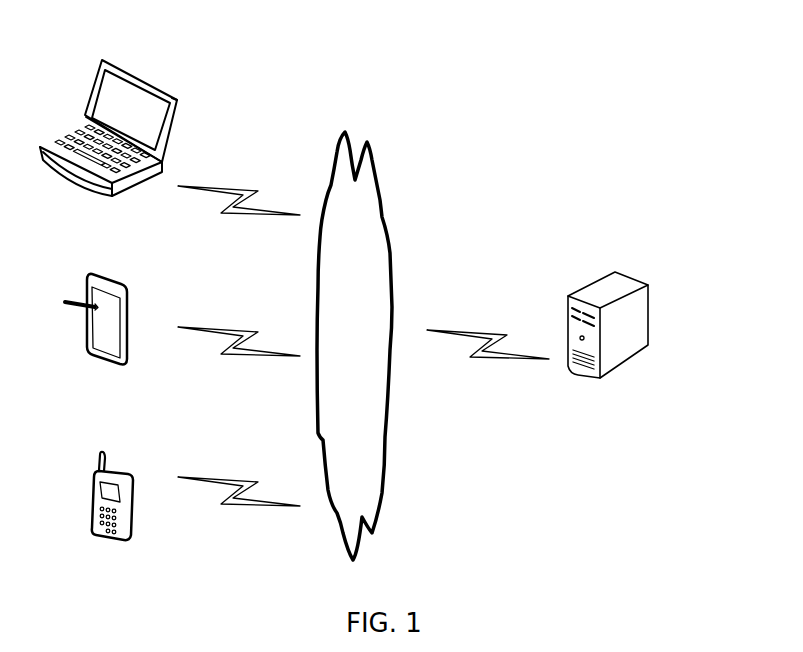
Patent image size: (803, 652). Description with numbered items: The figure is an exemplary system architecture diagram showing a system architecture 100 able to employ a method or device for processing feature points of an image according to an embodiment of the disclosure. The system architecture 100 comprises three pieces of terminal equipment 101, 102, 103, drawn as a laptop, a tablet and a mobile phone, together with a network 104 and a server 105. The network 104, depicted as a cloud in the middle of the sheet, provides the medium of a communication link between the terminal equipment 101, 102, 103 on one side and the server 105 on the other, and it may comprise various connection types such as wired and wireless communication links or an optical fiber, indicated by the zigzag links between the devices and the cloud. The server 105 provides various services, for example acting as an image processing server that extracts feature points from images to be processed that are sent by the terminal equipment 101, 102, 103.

The system architecture 100 is at (568, 53).
The terminal equipment 101 is at (112, 511).
The terminal equipment 102 is at (96, 336).
The terminal equipment 103 is at (108, 144).
The network 104 is at (354, 346).
The server 105 is at (608, 343).